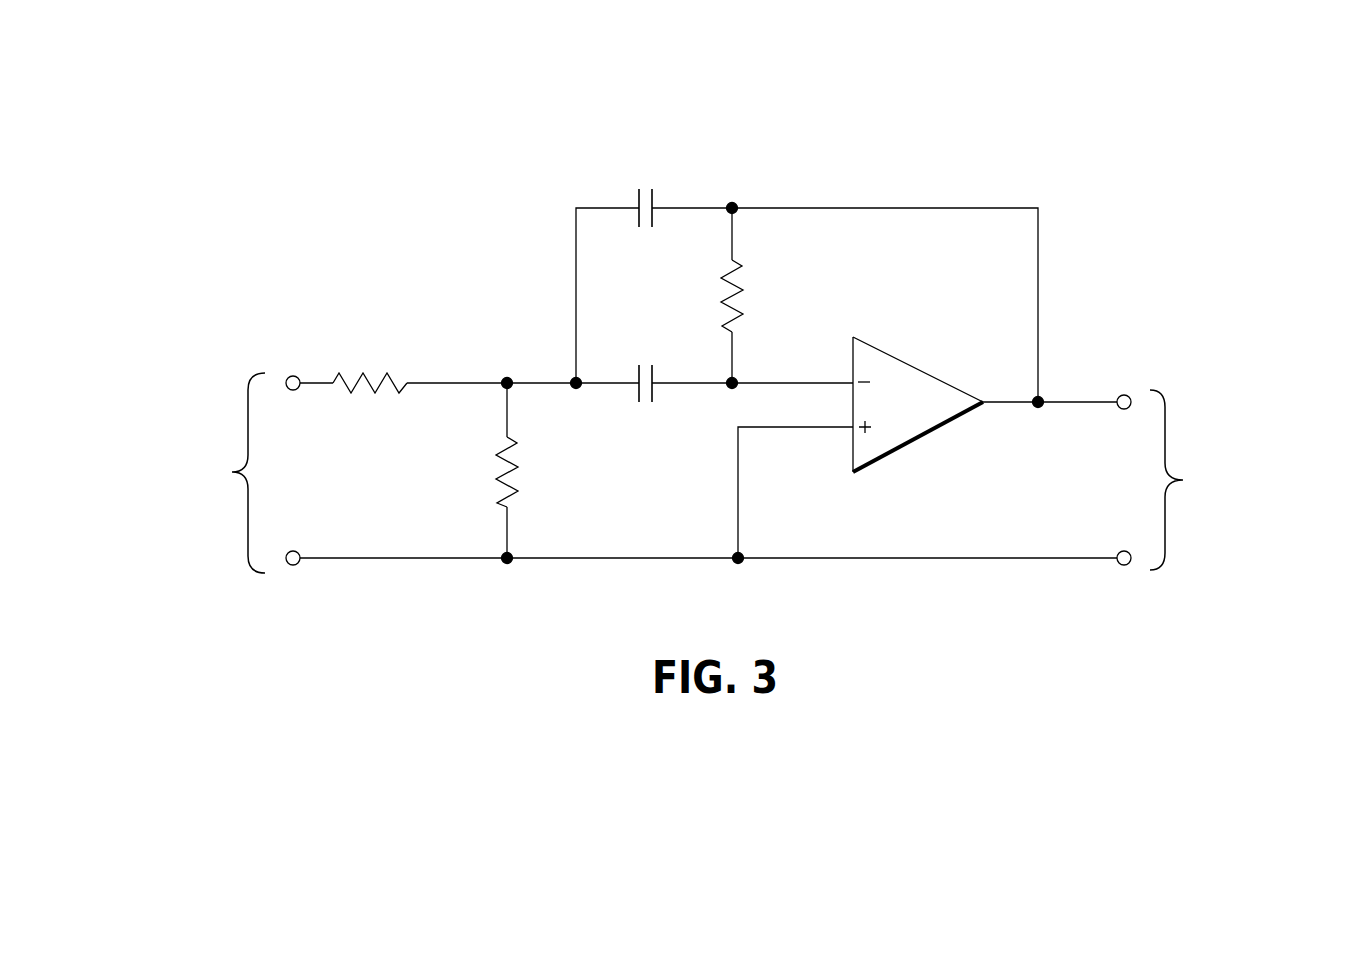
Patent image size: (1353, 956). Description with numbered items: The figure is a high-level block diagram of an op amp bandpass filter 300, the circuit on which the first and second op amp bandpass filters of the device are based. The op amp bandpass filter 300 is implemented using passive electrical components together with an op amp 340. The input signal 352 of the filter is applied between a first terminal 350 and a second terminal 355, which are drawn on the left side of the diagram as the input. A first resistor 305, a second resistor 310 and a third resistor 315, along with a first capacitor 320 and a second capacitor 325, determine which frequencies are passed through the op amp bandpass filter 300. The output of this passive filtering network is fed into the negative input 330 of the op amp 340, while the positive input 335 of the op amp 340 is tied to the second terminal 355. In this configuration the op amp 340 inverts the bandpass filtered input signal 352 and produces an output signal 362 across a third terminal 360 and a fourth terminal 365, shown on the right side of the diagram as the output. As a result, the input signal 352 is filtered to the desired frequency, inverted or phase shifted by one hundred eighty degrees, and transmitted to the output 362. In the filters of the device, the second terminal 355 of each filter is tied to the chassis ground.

The op amp bandpass filter 300 is at (1095, 102).
The resistor R1 305 is at (397, 373).
The resistor R2 310 is at (499, 457).
The resistor R3 315 is at (724, 287).
The capacitor C1 320 is at (638, 195).
The capacitor C2 325 is at (653, 392).
The negative input 330 is at (838, 385).
The positive input 335 is at (792, 430).
The op amp 340 is at (880, 350).
The first terminal 350 is at (293, 375).
The input signal 352 is at (170, 460).
The second terminal 355 is at (296, 566).
The third terminal 360 is at (1124, 394).
The output signal 362 is at (1250, 490).
The fourth terminal 365 is at (1122, 566).